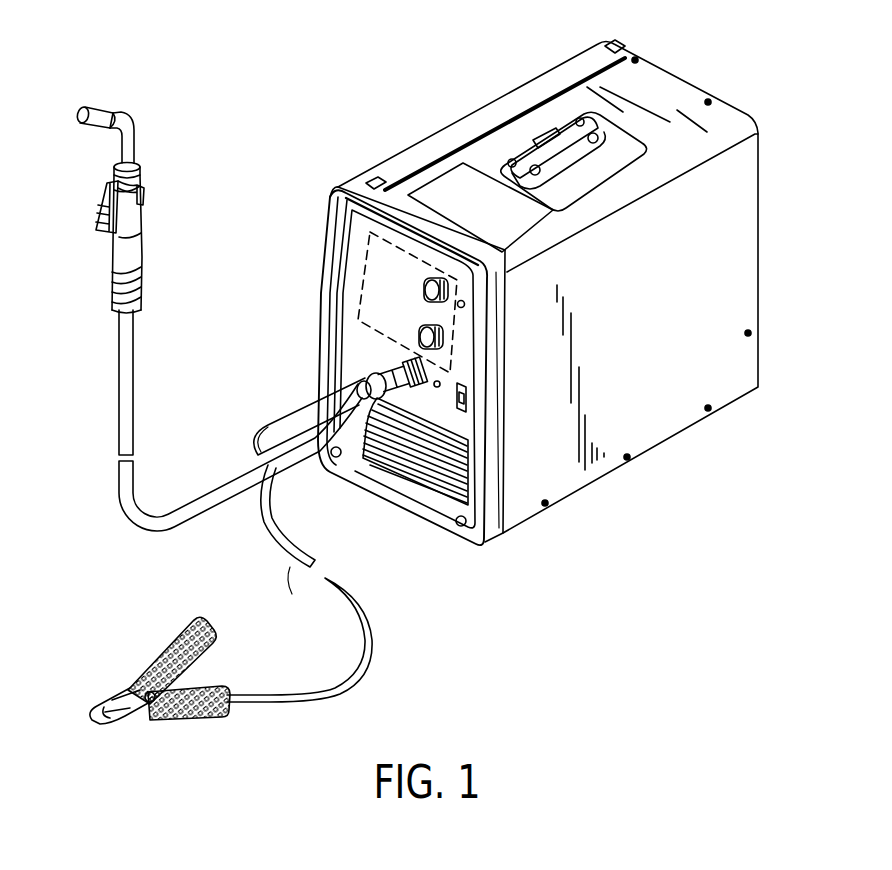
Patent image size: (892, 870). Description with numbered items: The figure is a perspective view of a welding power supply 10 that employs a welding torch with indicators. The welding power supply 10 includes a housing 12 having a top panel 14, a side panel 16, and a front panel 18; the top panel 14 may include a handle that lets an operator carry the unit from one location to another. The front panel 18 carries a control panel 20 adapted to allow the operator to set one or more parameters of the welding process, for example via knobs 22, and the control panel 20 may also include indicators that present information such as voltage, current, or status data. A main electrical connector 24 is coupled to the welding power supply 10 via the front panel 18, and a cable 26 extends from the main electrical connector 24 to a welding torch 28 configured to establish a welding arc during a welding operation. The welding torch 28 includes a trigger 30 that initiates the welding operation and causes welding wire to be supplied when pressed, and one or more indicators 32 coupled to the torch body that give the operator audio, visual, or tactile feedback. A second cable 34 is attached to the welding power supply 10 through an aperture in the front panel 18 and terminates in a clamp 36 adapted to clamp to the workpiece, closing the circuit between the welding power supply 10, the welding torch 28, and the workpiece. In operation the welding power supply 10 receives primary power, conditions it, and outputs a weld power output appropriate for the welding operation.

The welding power supply 10 is at (372, 116).
The housing 12 is at (540, 74).
The top panel 14 is at (676, 87).
The side panel 16 is at (750, 364).
The front panel 18 is at (337, 207).
The control panel 20 is at (380, 283).
The knobs 22 is at (441, 338).
The main electrical connector 24 is at (312, 452).
The cable 26 is at (130, 437).
The welding torch 28 is at (134, 217).
The trigger 30 is at (105, 205).
The indicators 32 is at (141, 192).
The second cable 34 is at (338, 592).
The clamp 36 is at (153, 661).